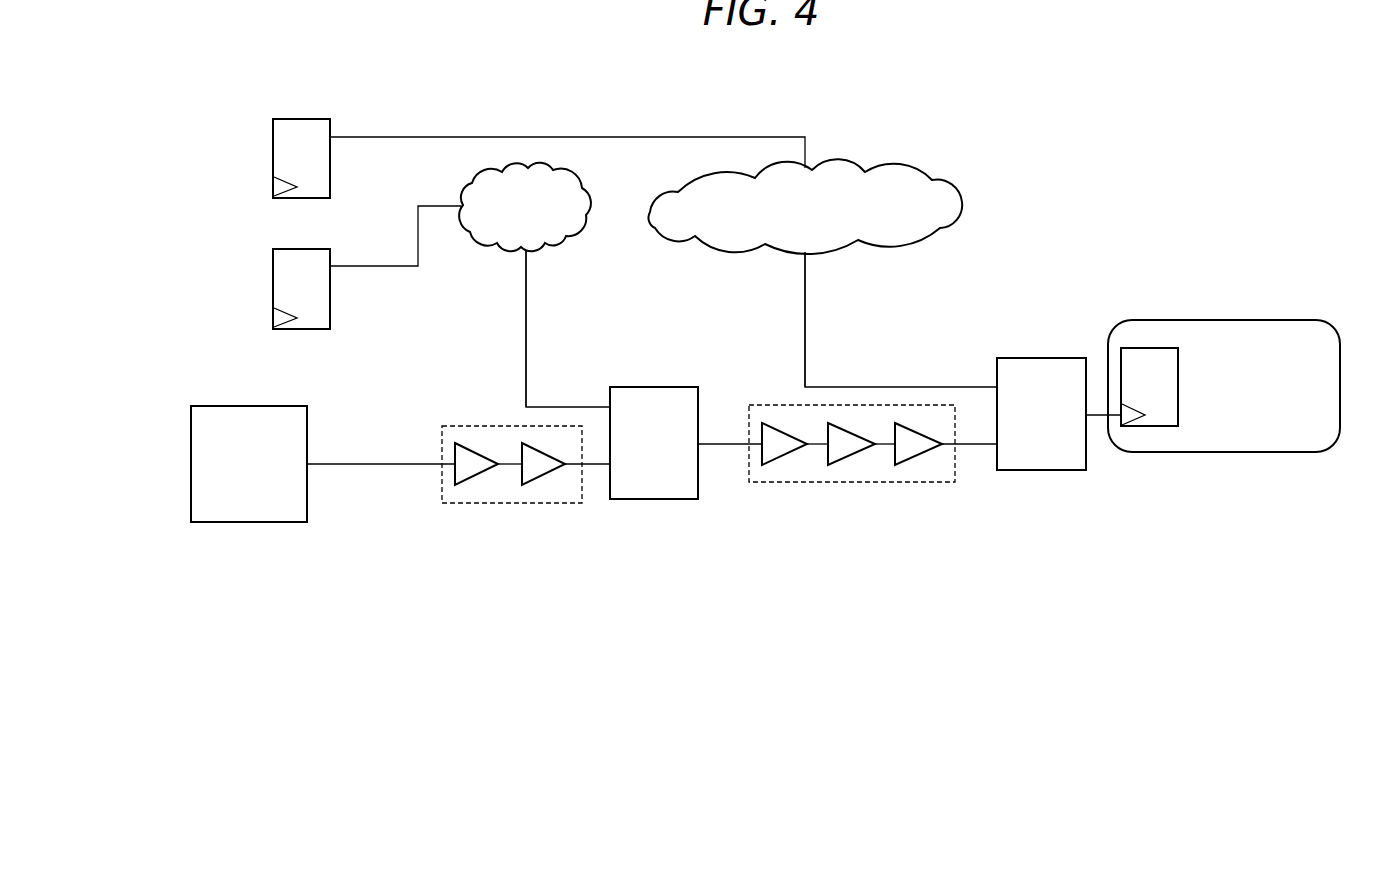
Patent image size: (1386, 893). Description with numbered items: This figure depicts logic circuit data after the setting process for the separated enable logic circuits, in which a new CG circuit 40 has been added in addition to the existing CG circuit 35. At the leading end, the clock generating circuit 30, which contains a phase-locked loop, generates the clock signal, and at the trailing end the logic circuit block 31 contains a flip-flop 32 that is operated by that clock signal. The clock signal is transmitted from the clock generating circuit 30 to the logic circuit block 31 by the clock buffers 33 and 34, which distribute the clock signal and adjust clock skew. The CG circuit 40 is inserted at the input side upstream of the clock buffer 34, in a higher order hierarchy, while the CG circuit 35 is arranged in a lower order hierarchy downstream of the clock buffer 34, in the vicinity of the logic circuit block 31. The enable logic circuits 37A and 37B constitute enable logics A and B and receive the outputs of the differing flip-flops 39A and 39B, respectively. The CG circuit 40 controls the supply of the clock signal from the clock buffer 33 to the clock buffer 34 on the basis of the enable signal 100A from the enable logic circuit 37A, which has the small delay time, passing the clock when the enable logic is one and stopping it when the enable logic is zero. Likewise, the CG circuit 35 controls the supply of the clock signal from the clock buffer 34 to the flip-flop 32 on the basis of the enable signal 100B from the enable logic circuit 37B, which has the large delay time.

The clock generating circuit 30 is at (245, 405).
The logic circuit block 31 is at (1221, 320).
The flip-flop 32 is at (1153, 428).
The clock buffer 33 is at (514, 508).
The clock buffer 34 is at (859, 487).
The CG circuit 35 is at (1040, 357).
The enable logic circuit 37A is at (562, 240).
The enable logic circuit 37B is at (895, 168).
The flip-flop 39A is at (272, 286).
The flip-flop 39B is at (272, 155).
The CG circuit 40 is at (652, 385).
The enable signal 100A is at (525, 350).
The enable signal 100B is at (806, 308).